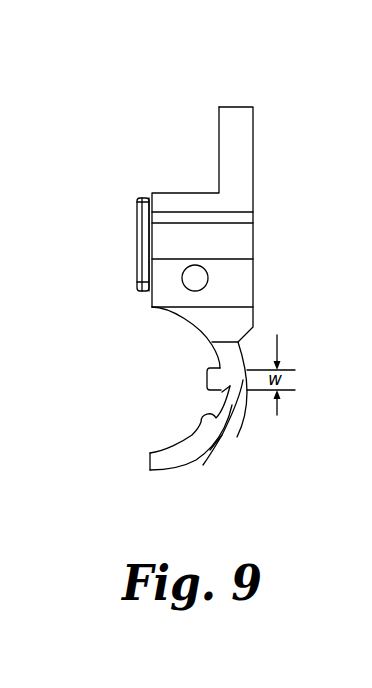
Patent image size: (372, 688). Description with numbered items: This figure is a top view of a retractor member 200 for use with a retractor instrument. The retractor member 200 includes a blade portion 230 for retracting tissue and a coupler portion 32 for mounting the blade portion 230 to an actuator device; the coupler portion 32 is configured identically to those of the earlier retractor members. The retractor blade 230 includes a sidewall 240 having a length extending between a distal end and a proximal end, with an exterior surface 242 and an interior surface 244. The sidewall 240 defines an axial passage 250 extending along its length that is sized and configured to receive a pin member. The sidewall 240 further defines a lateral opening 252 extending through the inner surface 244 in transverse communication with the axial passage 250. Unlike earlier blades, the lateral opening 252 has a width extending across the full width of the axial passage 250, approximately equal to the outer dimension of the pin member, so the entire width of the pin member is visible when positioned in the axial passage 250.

The retractor member 200 is at (147, 154).
The coupler portion 32 is at (269, 153).
The blade portion 230 is at (190, 353).
The lateral opening 252 is at (205, 379).
The sidewall 240 is at (185, 435).
The exterior surface 242 is at (192, 470).
The interior surface 244 is at (222, 453).
The axial passage 250 is at (227, 392).